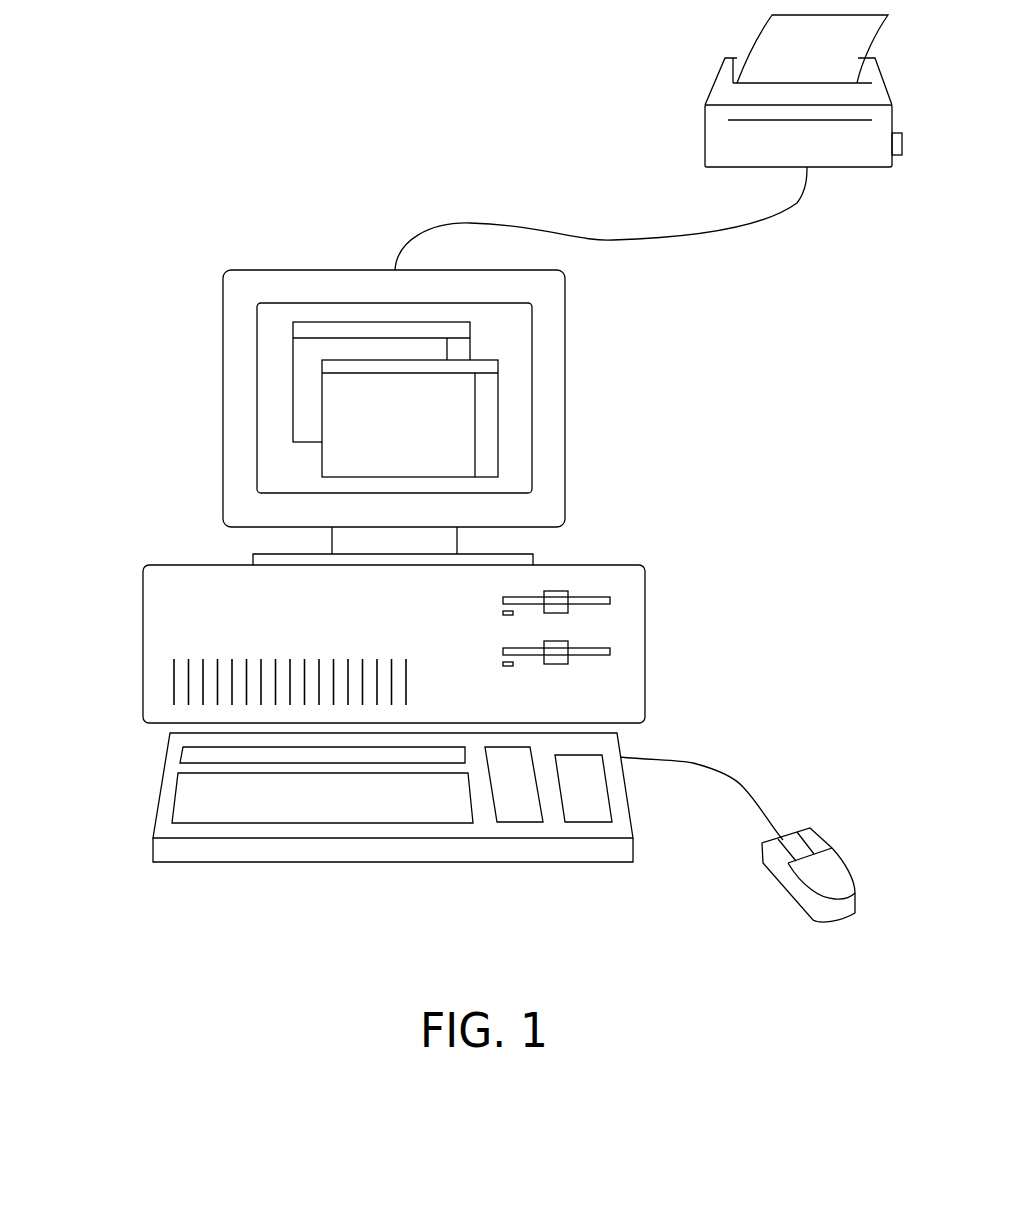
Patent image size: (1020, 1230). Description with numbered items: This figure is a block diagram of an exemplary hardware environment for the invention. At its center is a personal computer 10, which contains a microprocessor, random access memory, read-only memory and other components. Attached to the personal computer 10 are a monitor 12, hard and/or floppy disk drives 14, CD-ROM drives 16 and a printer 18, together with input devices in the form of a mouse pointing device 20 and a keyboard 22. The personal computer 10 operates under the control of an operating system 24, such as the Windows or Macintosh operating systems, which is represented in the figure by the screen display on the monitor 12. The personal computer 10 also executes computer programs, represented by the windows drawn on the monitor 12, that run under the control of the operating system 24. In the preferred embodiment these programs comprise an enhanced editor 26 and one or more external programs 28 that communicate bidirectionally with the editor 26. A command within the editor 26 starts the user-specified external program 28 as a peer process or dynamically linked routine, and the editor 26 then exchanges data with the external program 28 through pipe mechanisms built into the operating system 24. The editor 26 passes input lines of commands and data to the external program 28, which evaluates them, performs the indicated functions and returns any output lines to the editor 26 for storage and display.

The personal computer 10 is at (143, 677).
The monitor 12 is at (570, 402).
The floppy disk drive 14 is at (612, 600).
The CD-ROM drive 16 is at (612, 652).
The printer 18 is at (692, 130).
The mouse pointing device 20 is at (810, 940).
The keyboard 22 is at (393, 862).
The operating system 24 is at (217, 630).
The editor 26 is at (410, 365).
The external program 28 is at (307, 328).